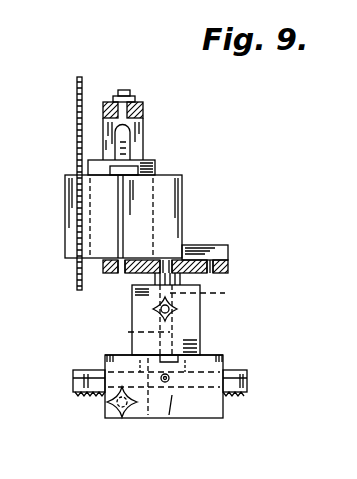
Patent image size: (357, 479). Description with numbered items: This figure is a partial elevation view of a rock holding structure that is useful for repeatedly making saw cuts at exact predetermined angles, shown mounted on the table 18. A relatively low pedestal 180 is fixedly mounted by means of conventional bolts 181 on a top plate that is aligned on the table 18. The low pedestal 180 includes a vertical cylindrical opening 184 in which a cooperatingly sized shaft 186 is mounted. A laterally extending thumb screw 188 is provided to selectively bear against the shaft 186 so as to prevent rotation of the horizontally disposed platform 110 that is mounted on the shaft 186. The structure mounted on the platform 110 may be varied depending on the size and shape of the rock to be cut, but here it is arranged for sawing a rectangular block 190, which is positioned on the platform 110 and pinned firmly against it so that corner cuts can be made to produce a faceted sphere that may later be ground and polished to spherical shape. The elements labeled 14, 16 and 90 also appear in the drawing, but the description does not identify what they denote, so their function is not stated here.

The threaded rod 14 is at (77, 108).
The rectangular block 190 is at (183, 195).
The platform 110 is at (228, 250).
The low pedestal 180 is at (200, 322).
The vertical cylindrical opening 184 is at (214, 299).
The thumb screw 188 is at (158, 305).
The shaft 186 is at (128, 332).
The carriage assembly 16 is at (232, 358).
The table 18 is at (213, 407).
The star wheel 90 is at (105, 410).
The bolts 181 is at (152, 420).